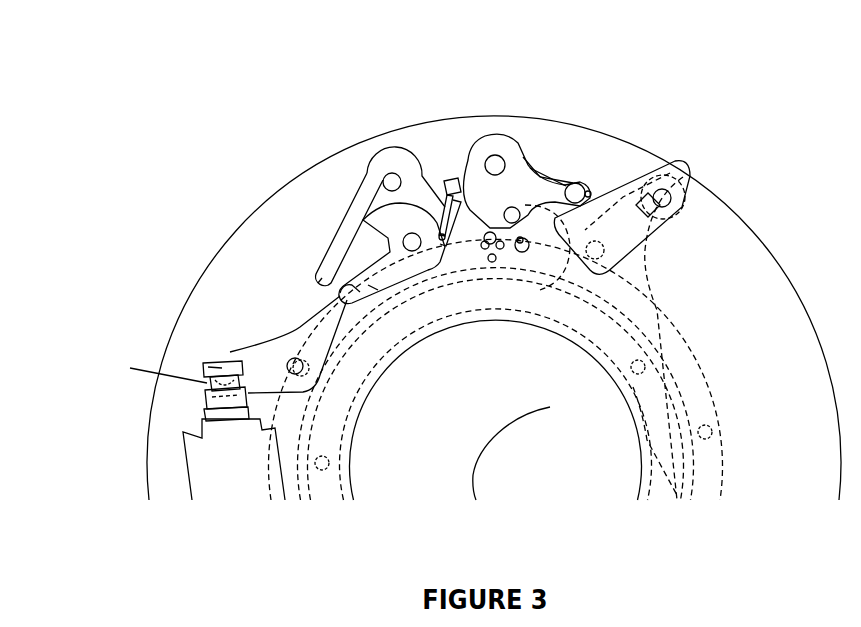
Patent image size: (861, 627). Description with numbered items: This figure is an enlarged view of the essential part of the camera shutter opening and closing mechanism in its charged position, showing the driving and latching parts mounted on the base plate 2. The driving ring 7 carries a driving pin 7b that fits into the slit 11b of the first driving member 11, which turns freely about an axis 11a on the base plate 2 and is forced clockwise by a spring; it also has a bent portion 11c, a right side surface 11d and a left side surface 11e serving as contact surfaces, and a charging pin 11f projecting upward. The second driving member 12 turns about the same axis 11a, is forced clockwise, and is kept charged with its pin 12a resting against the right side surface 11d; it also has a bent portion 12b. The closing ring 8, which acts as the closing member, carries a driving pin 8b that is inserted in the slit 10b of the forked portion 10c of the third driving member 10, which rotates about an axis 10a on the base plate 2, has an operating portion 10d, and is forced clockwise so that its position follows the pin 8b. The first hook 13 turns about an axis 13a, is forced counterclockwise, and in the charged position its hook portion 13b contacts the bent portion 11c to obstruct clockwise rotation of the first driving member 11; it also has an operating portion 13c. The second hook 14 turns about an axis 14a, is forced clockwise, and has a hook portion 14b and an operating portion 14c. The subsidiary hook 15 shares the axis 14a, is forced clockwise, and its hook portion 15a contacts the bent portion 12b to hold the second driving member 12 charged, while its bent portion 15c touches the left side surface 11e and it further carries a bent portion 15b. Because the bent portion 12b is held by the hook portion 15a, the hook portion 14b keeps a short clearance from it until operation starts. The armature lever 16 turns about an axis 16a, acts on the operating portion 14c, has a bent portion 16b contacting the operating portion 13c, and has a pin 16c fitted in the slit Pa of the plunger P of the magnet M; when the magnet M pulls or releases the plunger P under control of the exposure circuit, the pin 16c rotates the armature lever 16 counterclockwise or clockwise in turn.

The base plate 2 is at (230, 303).
The driving ring 7 is at (608, 338).
The driving pin 7b is at (520, 240).
The closing ring 8 is at (647, 252).
The driving pin 8b is at (662, 200).
The third driving member 10 is at (658, 217).
The axis 10a is at (598, 248).
The slit 10b is at (663, 190).
The forked portion 10c is at (646, 200).
The operating portion 10d is at (588, 192).
The first driving member 11 is at (494, 140).
The axis 11a is at (494, 160).
The slit 11b is at (505, 258).
The bent portion 11c is at (490, 238).
The right side surface 11d is at (544, 175).
The left side surface 11e is at (492, 258).
The charging pin 11f is at (523, 158).
The second driving member 12 is at (538, 176).
The pin 12a is at (576, 185).
The bent portion 12b is at (500, 245).
The first hook 13 is at (337, 213).
The axis 13a is at (392, 182).
The hook portion 13b is at (440, 194).
The operating portion 13c is at (335, 257).
The second hook 14 is at (365, 220).
The axis 14a is at (355, 222).
The hook portion 14b is at (485, 245).
The operating portion 14c is at (373, 287).
The subsidiary hook 15 is at (446, 180).
The hook portion 15a is at (462, 190).
The bent portion 15b is at (452, 200).
The bent portion 15c is at (442, 237).
The armature lever 16 is at (322, 318).
The axis 16a is at (290, 360).
The bent portion 16b is at (340, 297).
The pin 16c is at (208, 367).
The plunger P is at (207, 402).
The slit Pa is at (222, 368).
The magnet M is at (235, 465).